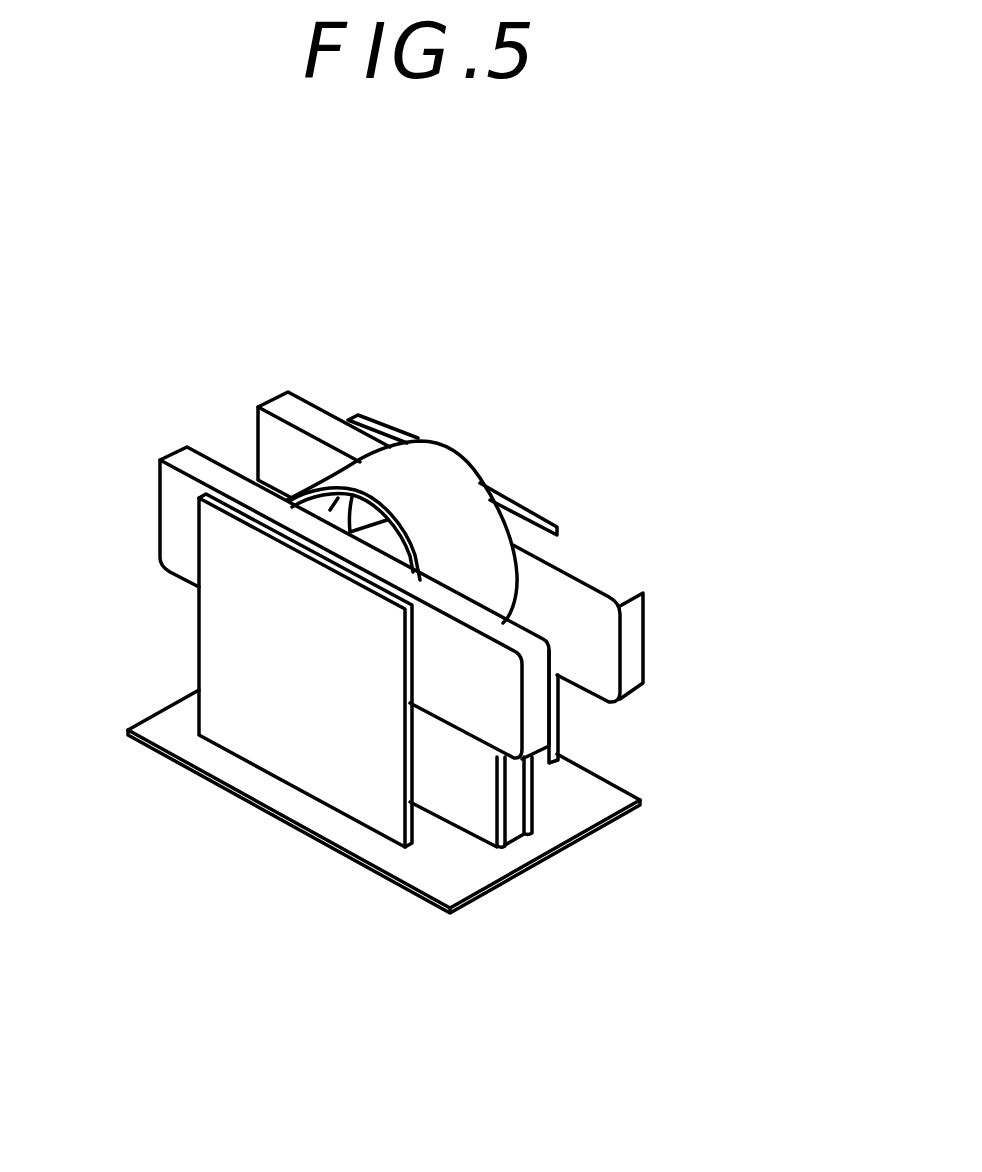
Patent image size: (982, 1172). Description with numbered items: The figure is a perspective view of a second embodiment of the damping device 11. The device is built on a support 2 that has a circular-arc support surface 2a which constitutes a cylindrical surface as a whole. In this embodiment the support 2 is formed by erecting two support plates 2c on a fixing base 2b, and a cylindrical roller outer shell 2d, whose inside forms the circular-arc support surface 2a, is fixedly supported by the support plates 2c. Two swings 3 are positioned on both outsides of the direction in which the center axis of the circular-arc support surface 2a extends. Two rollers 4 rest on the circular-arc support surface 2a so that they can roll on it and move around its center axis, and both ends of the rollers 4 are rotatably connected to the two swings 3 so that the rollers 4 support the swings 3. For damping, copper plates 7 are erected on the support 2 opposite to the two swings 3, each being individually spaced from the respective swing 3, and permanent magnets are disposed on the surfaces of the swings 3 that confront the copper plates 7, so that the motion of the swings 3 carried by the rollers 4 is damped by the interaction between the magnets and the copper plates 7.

The support 2 is at (568, 847).
The circular-arc support surface 2a is at (403, 457).
The fixing base 2b is at (620, 820).
The support plates 2c is at (538, 793).
The cylindrical roller outer shell 2d is at (440, 498).
The swings 3 is at (315, 405).
The rollers 4 is at (382, 542).
The copper plates 7 is at (562, 723).
The damping device 11 is at (647, 542).